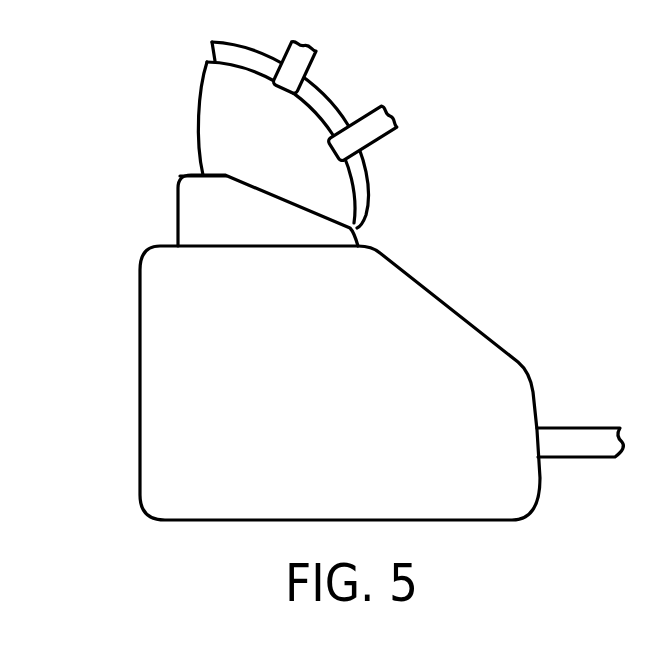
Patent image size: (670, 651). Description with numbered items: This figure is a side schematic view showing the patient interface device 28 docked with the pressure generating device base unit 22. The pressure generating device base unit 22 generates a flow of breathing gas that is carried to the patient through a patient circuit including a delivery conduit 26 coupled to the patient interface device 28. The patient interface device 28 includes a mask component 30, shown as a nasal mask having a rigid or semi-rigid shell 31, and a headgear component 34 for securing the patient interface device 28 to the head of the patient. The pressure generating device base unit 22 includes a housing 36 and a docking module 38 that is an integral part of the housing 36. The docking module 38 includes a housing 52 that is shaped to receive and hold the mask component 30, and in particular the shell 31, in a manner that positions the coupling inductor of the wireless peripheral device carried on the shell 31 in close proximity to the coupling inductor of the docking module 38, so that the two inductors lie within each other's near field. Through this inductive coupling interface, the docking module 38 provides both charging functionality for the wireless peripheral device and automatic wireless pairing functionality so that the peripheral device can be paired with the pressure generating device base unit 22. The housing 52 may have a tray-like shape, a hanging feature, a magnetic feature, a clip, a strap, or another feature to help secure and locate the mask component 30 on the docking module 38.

The pressure generating device base unit 22 is at (279, 260).
The delivery conduit 26 is at (570, 437).
The patient interface device 28 is at (208, 114).
The mask component 30 is at (213, 42).
The shell 31 is at (210, 115).
The headgear component 34 is at (372, 120).
The housing 36 is at (152, 404).
The docking module 38 is at (182, 176).
The housing 52 is at (192, 211).